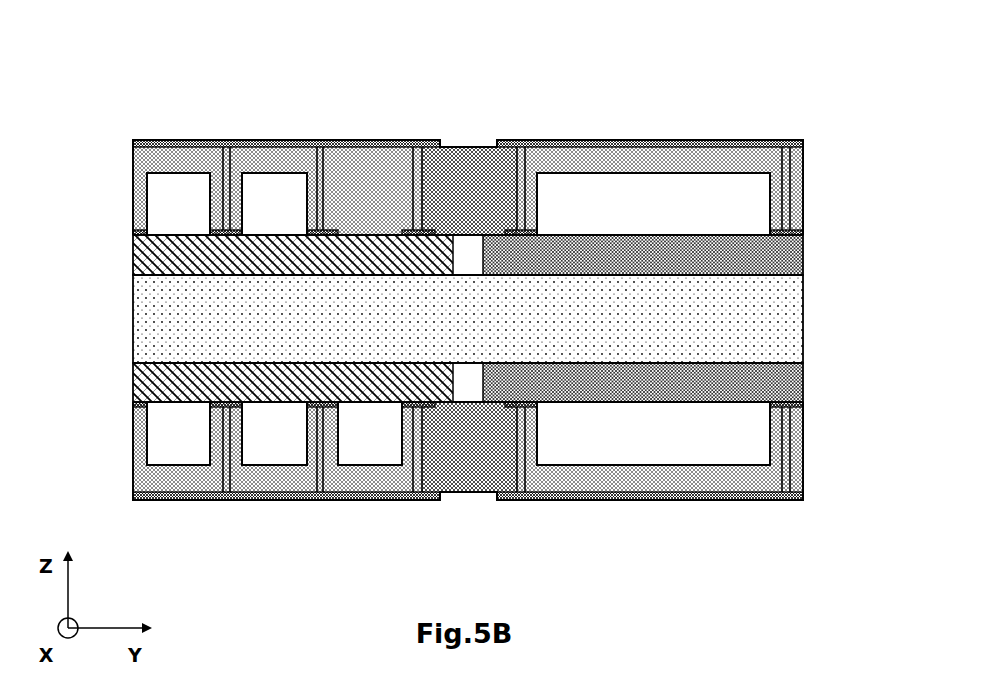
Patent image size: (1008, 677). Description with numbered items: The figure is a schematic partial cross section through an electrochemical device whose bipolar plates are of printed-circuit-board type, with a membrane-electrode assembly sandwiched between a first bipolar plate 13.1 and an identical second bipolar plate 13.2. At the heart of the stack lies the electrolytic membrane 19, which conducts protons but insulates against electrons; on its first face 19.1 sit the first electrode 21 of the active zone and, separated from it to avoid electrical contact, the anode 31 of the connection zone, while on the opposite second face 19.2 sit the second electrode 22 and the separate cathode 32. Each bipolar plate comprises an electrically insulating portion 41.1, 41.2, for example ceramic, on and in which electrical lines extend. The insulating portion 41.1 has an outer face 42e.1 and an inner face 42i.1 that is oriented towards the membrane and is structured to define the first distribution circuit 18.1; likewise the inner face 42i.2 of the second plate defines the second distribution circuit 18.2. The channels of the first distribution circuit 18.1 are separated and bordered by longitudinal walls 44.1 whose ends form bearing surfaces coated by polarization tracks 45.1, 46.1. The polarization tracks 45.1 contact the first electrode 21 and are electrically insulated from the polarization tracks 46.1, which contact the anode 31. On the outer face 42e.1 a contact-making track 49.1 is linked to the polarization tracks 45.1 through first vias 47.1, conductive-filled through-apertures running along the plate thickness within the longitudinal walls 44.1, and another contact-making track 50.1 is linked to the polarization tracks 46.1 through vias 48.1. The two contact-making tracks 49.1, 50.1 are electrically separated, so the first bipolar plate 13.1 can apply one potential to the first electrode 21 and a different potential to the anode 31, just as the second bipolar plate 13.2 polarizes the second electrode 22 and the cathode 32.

The first bipolar plate 13.1 is at (463, 156).
The second bipolar plate 13.2 is at (417, 455).
The first distribution circuit 18.1 is at (506, 204).
The second distribution circuit 18.2 is at (458, 433).
The electrolytic membrane 19 is at (468, 319).
The first face of the electrolytic membrane 19.1 is at (295, 276).
The second face of the electrolytic membrane 19.2 is at (295, 363).
The first electrode 21 is at (133, 248).
The second electrode 22 is at (133, 383).
The anode 31 is at (803, 248).
The cathode 32 is at (803, 375).
The insulating portion 41.1 is at (469, 191).
The insulating portion 41.2 is at (469, 447).
The outer face 42e.1 is at (467, 147).
The inner face 42i.1 is at (468, 240).
The inner face 42i.2 is at (470, 398).
The longitudinal wall 44.1 is at (180, 173).
The polarization track 45.1 is at (340, 233).
The polarization track 46.1 is at (547, 233).
The first via 47.1 is at (313, 191).
The via 48.1 is at (523, 189).
The contact-making track 49.1 is at (348, 140).
The contact-making track 50.1 is at (650, 140).